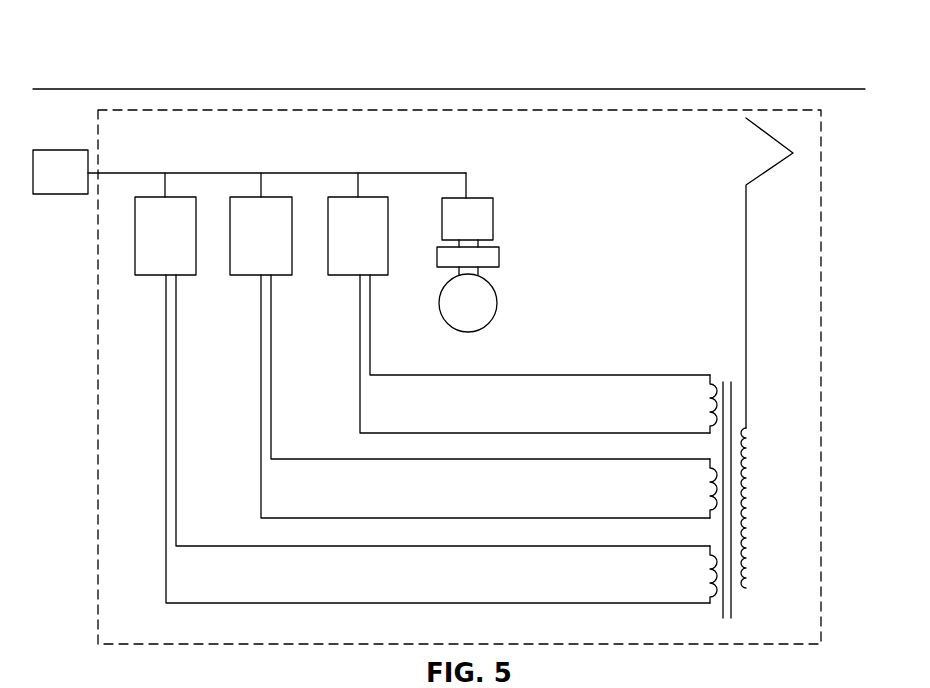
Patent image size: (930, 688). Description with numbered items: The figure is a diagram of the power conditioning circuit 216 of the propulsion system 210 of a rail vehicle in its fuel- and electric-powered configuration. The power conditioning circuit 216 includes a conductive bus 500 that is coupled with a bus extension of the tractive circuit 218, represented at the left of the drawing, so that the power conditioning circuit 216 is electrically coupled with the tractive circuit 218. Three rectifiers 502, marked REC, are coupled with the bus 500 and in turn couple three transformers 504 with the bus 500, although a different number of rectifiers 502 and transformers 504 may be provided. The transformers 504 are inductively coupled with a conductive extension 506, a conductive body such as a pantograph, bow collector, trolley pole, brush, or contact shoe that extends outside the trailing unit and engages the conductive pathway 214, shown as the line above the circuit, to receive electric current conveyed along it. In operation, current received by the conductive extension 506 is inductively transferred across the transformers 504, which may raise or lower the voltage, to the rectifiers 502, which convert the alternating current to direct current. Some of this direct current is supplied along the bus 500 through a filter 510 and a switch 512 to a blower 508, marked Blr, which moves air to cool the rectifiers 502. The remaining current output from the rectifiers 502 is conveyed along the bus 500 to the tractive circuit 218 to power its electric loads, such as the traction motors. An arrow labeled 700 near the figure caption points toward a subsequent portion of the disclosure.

The propulsion system 210 is at (692, 70).
The conductive pathway 214 is at (523, 88).
The power conditioning circuit 216 is at (552, 112).
The tractive circuit 218 is at (72, 195).
The conductive bus 500 is at (214, 172).
The rectifiers 502 is at (150, 277).
The transformers 504 is at (704, 404).
The conductive extension 506 is at (745, 278).
The blower 508 is at (497, 303).
The filter 510 is at (499, 260).
The switch 512 is at (493, 222).
The reference to FIG. 7 700 is at (618, 687).